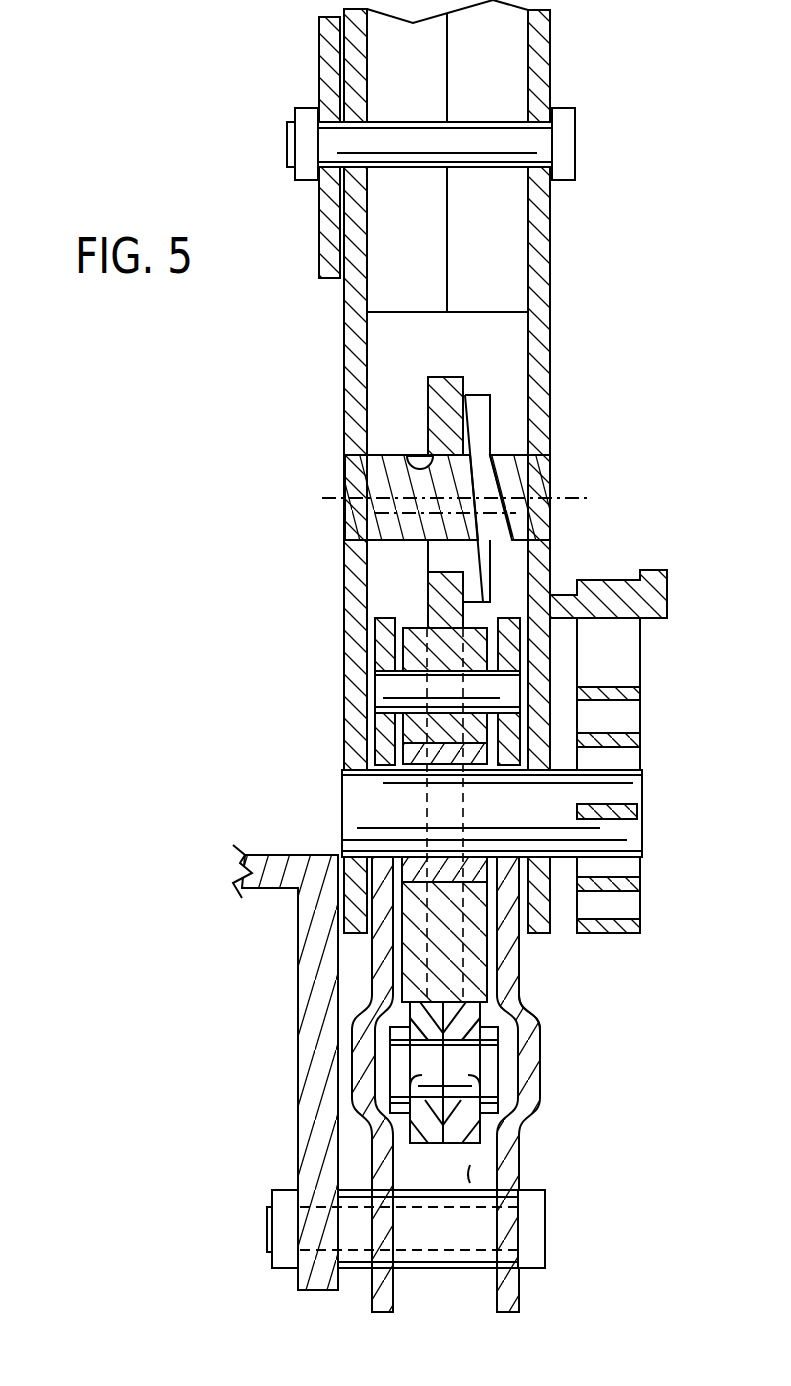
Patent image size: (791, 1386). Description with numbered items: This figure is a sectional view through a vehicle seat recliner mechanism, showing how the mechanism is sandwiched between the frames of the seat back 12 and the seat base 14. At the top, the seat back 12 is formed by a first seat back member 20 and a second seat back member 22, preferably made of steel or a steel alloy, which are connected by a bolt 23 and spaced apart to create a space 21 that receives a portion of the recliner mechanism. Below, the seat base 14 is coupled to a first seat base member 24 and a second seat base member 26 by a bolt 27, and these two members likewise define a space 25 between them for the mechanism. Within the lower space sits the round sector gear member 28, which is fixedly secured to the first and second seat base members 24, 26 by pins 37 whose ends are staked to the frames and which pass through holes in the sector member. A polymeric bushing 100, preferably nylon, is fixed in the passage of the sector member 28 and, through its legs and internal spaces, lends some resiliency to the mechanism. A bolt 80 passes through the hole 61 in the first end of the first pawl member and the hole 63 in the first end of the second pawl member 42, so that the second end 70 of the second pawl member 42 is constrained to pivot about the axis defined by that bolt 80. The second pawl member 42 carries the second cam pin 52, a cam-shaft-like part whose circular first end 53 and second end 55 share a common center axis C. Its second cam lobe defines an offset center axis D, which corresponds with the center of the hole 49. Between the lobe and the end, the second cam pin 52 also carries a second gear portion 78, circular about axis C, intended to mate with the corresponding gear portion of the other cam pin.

The seat back 12 is at (325, 58).
The seat base 14 is at (310, 947).
The first seat back member 20 is at (352, 372).
The space 21 is at (466, 346).
The second seat back member 22 is at (552, 367).
The bolt 23 is at (530, 130).
The first seat base member 24 is at (364, 1043).
The space 25 is at (470, 1165).
The second seat base member 26 is at (473, 1052).
The bolt 27 is at (538, 1228).
The sector gear member 28 is at (478, 933).
The pin 37 is at (378, 686).
The second pawl member 42 is at (431, 594).
The hole 49 is at (413, 463).
The second cam pin 52 is at (509, 456).
The first end 53 is at (552, 468).
The second end 55 is at (348, 470).
The hole 61 is at (485, 1081).
The hole 63 is at (413, 1080).
The second end 70 is at (453, 378).
The second gear portion 78 is at (481, 557).
The bolt 80 is at (529, 1021).
The bushing 100 is at (487, 757).
The center axis C is at (576, 499).
The second cam lobe center axis D is at (495, 513).